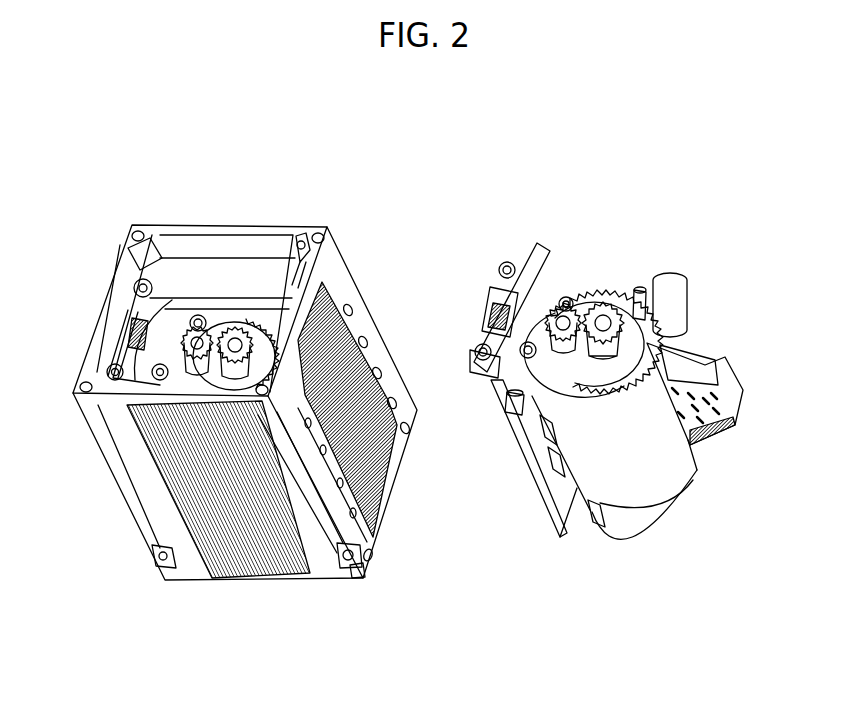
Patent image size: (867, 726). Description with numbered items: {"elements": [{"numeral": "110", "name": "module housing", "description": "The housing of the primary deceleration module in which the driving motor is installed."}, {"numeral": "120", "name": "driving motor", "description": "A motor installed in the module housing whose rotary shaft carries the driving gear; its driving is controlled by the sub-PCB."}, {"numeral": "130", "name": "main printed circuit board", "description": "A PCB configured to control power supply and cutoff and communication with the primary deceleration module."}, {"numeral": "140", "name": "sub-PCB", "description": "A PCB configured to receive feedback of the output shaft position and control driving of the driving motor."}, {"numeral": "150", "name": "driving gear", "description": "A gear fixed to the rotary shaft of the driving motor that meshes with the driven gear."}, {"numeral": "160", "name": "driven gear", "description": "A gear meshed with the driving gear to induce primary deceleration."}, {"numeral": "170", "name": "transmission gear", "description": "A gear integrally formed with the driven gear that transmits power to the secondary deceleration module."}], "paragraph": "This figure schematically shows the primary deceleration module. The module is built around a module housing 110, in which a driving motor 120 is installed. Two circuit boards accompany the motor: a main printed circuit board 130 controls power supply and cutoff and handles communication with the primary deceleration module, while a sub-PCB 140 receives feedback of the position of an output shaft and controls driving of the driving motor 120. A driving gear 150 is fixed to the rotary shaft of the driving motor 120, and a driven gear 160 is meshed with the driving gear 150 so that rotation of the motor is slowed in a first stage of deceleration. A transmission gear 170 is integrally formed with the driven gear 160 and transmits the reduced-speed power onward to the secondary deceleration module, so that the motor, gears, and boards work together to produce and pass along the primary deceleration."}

The housing 110 is at (207, 238).
The motor 120 is at (647, 478).
The bracket plate 130 is at (543, 482).
The connector 140 is at (727, 407).
The fixing screw 150 is at (125, 337).
The gear unit 160 is at (193, 367).
The support shaft 170 is at (300, 245).